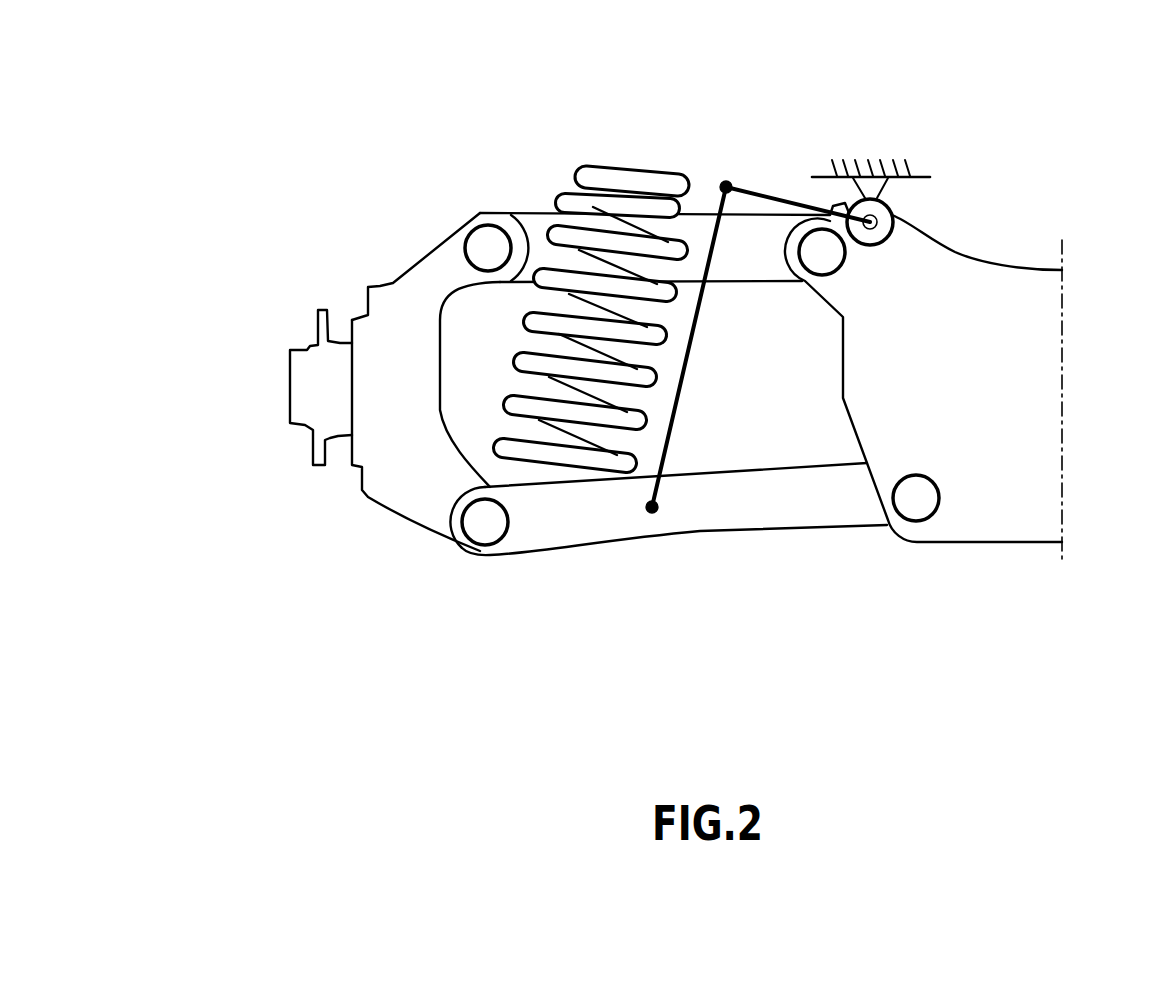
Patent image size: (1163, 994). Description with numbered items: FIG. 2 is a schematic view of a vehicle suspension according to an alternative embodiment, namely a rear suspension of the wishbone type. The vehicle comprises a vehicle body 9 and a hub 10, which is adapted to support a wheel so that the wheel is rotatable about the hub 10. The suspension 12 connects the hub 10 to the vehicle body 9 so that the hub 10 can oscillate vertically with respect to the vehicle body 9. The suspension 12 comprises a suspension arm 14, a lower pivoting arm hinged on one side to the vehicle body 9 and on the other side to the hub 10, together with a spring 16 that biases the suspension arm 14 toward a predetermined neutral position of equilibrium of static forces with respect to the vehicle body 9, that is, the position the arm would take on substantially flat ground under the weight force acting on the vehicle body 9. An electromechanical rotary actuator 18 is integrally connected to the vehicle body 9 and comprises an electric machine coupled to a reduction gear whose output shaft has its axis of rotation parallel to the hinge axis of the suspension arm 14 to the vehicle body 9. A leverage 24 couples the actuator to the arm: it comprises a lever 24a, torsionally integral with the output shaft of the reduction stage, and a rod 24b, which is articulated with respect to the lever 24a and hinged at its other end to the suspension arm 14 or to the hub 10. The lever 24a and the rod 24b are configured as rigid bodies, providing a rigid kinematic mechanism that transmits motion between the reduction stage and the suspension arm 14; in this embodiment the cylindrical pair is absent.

The vehicle body 9 is at (917, 170).
The hub 10 is at (305, 393).
The suspension 12 is at (358, 270).
The suspension arm 14 is at (558, 525).
The spring 16 is at (563, 237).
The electromechanical rotary actuator 18 is at (893, 212).
The leverage 24 is at (709, 344).
The lever 24a is at (772, 195).
The rod 24b is at (683, 367).